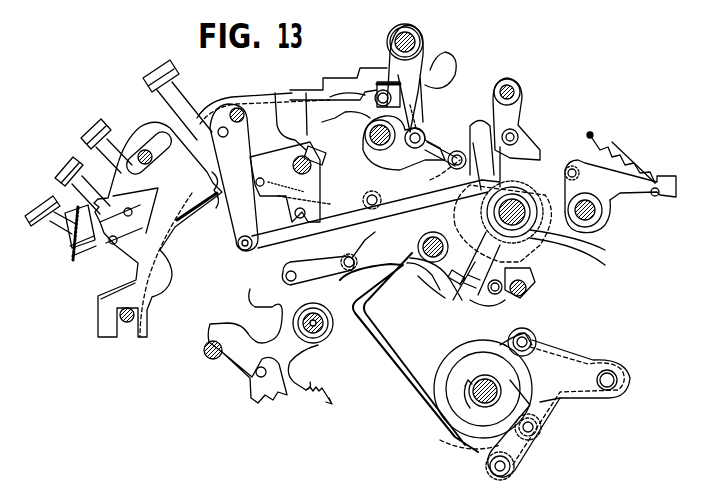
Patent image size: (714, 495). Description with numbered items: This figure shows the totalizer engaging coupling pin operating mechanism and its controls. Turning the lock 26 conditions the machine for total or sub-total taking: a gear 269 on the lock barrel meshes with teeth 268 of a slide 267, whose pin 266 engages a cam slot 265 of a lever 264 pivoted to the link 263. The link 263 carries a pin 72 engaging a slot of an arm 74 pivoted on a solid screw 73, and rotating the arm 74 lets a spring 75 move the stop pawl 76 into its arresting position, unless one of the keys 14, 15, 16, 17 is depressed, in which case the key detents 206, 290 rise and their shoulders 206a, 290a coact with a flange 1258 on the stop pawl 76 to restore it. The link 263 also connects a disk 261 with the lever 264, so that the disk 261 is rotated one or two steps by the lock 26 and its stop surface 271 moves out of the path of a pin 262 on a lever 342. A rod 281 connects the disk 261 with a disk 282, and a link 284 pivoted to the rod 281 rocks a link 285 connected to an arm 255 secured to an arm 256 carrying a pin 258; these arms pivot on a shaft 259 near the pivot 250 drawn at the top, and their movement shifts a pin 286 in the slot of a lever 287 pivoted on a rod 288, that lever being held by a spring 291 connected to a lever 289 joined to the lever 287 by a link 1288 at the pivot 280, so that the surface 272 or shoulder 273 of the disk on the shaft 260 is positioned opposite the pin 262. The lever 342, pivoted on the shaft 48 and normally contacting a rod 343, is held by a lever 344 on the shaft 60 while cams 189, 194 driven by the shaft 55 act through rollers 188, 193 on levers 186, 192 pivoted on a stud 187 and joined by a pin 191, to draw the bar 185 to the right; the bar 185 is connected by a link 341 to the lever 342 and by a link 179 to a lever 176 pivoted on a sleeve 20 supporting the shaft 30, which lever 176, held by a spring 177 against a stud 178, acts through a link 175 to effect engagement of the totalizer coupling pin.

The key 14 is at (163, 68).
The key 15 is at (94, 125).
The key 16 is at (64, 166).
The key 17 is at (44, 204).
The lock 26 is at (83, 213).
The gear 269 is at (70, 247).
The teeth 268 is at (70, 265).
The slide 267 is at (82, 270).
The pin 266 is at (181, 222).
The stop pawl 76 is at (231, 199).
The lever 264 is at (236, 245).
The link 263 is at (246, 254).
The cam slot 265 is at (252, 132).
The shoulder 206a is at (270, 96).
The key detent 290 is at (303, 84).
The key detent 206 is at (340, 77).
The shoulder 290a is at (347, 108).
The arm 256 is at (380, 58).
The pivot pin 250 is at (413, 30).
The arm 255 is at (438, 62).
The pin 258 is at (410, 102).
The link 285 is at (420, 116).
The shaft 60 is at (366, 136).
The lever 344 is at (432, 142).
The pin 286 is at (495, 121).
The solid screw 73 is at (318, 164).
The spring 75 is at (318, 185).
The flange 1258 is at (375, 190).
The arm 74 is at (322, 203).
The pin 72 is at (294, 214).
The link 341 is at (352, 257).
The lever 342 is at (373, 232).
The link 179 is at (312, 280).
The shaft 48 is at (406, 272).
The link 284 is at (455, 285).
The rod 281 is at (450, 300).
The bar 185 is at (415, 402).
The sleeve 20 is at (322, 342).
The shaft 30 is at (316, 352).
The spring 177 is at (315, 398).
The link 175 is at (265, 406).
The stud 178 is at (211, 360).
The lever 176 is at (250, 306).
The shoulder 273 is at (530, 254).
The surface 272 is at (532, 281).
The rod 343 is at (528, 294).
The disk 282 is at (458, 223).
The stop surface 271 is at (478, 281).
The pin 262 is at (495, 305).
The pivot pin 280 is at (517, 88).
The link 1288 is at (526, 138).
The rod 288 is at (577, 169).
The lever 287 is at (588, 157).
The spring 291 is at (620, 157).
The lever 289 is at (633, 200).
The disk 261 is at (530, 217).
The shaft 260 is at (612, 254).
The shaft 259 is at (614, 274).
The cam 194 is at (486, 345).
The shaft 55 is at (498, 372).
The roller 193 is at (544, 326).
The lever 192 is at (565, 350).
The lever 186 is at (594, 356).
The stud 187 is at (620, 380).
The roller 188 is at (552, 420).
The pin 191 is at (540, 436).
The cam 189 is at (516, 468).